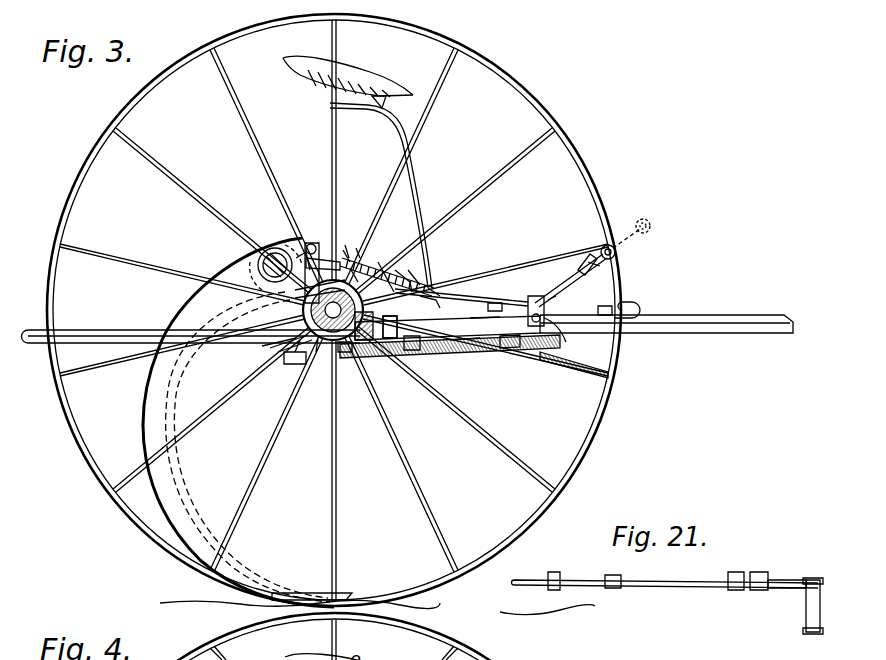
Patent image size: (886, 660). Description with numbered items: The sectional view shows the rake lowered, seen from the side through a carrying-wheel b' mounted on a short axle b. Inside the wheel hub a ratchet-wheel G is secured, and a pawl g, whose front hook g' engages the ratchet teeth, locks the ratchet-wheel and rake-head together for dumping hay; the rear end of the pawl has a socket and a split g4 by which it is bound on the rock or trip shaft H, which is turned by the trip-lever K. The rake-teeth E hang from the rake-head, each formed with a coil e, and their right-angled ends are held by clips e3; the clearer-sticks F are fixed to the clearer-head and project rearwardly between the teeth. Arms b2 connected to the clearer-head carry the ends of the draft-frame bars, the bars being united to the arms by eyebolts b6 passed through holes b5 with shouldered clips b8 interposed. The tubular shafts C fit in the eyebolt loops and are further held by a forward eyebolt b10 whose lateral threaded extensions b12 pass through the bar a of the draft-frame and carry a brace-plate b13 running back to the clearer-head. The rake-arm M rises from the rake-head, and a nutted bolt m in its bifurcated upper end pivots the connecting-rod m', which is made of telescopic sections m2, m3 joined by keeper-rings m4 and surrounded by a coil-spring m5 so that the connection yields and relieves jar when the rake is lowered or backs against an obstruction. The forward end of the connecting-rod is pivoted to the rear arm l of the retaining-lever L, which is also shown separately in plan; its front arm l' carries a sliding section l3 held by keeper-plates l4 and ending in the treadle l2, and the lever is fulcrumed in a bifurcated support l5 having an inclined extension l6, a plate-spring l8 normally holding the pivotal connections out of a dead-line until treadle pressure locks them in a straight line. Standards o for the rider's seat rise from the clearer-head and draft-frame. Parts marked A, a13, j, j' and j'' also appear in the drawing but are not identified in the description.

In FIG. 3, the carrying-wheel b' is at (334, 310).
In FIG. 3, the ratchet-wheel G is at (303, 310).
In FIG. 3, the coil e is at (258, 262).
In FIG. 3, the trip shaft H is at (315, 243).
In FIG. 3, the nutted bolt m is at (313, 225).
In FIG. 3, the rake-arm M is at (300, 252).
In FIG. 3, the pawl g is at (387, 254).
In FIG. 3, the split g4 is at (345, 250).
In FIG. 3, the tooth clip e3 is at (355, 259).
In FIG. 3, the hook g' is at (386, 265).
In FIG. 3, the connecting-rod m' is at (347, 217).
In FIG. 3, the telescopic section m2 is at (357, 248).
In FIG. 3, the coil-spring m5 is at (410, 268).
In FIG. 3, the keeper-ring m4 is at (434, 288).
In FIG. 3, the hole b5 is at (403, 273).
In FIG. 3, the eyebolt b6 is at (430, 287).
In FIG. 3, the supporting-standard o is at (357, 167).
In FIG. 3, the rake-teeth E is at (150, 478).
In FIG. 3, the clearer-sticks F is at (146, 327).
In FIG. 3, the shafts C is at (688, 336).
In FIG. 3, the draft-frame bar a is at (456, 340).
In FIG. 3, the forward eyebolt b10 is at (552, 348).
In FIG. 3, the lateral threaded extension b12 is at (525, 348).
In FIG. 3, the bar a13 is at (500, 340).
In FIG. 3, the brace-plate b13 is at (472, 342).
In FIG. 3, the shouldered clip b8 is at (390, 340).
In FIG. 3, the hinging-arm b2 is at (346, 354).
In FIG. 3, the dog j is at (287, 366).
In FIG. 3, the pawl j' is at (283, 360).
In FIG. 3, the pawl pin j'' is at (306, 369).
In FIG. 3, the short axle b is at (272, 352).
In FIG. 3, the telescopic section m3 is at (414, 352).
In FIG. 21, the telescopic section m3 is at (514, 586).
In FIG. 3, the rear arm l is at (461, 305).
In FIG. 21, the rear arm l is at (665, 572).
In FIG. 3, the frame bar A is at (490, 298).
In FIG. 3, the trip-lever K is at (528, 310).
In FIG. 3, the front arm l' is at (571, 280).
In FIG. 21, the front arm l' is at (726, 573).
In FIG. 3, the keeper-plate l4 is at (538, 298).
In FIG. 21, the keeper-plate l4 is at (758, 572).
In FIG. 3, the treadle l2 is at (615, 256).
In FIG. 21, the treadle l2 is at (800, 606).
In FIG. 3, the sliding section l3 is at (590, 270).
In FIG. 21, the sliding section l3 is at (772, 590).
In FIG. 3, the plate-spring l8 is at (562, 291).
In FIG. 3, the inclined extension l6 is at (599, 300).
In FIG. 3, the retaining-lever L is at (633, 303).
In FIG. 21, the retaining-lever L is at (636, 572).
In FIG. 3, the bifurcated support l5 is at (568, 336).